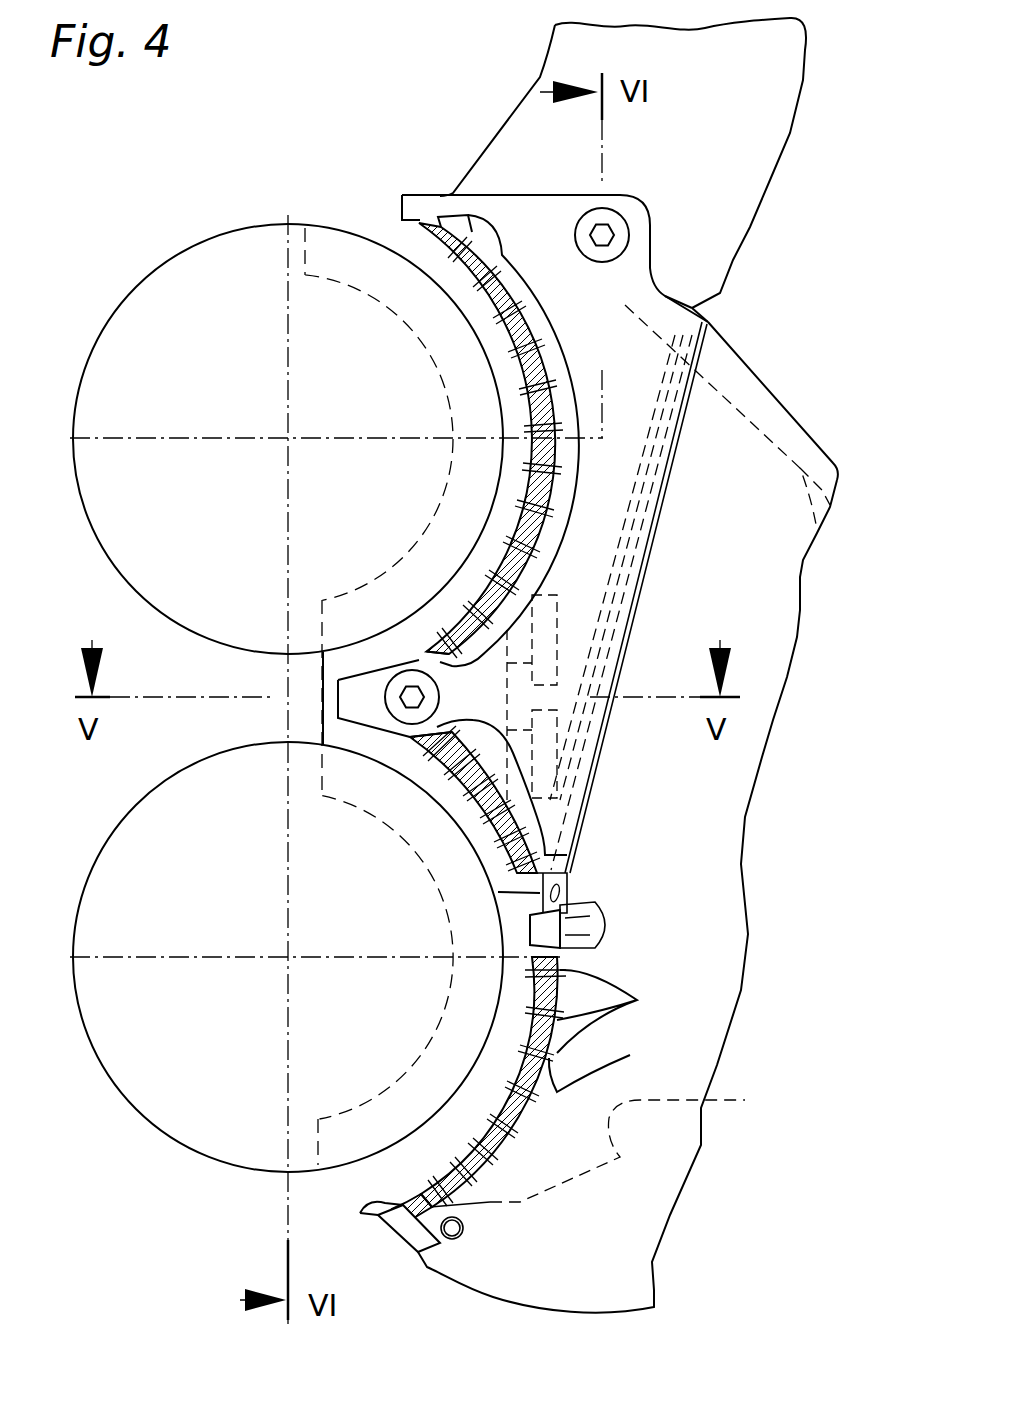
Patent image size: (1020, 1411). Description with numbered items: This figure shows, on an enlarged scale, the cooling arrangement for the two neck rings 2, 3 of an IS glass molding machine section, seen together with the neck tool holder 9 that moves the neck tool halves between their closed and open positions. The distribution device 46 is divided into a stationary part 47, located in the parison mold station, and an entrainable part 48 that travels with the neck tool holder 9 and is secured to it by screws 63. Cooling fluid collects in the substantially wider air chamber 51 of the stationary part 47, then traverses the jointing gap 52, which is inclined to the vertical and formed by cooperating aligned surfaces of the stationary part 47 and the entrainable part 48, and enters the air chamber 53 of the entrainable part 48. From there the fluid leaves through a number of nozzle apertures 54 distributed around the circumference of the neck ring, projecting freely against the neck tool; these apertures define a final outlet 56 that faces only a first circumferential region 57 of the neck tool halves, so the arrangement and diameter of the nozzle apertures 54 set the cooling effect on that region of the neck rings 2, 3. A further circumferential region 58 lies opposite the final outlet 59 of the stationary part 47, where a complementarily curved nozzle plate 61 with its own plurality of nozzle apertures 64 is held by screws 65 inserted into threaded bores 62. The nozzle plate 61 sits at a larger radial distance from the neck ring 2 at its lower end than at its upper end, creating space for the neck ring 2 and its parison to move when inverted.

The neck ring 2 is at (222, 1178).
The neck ring 3 is at (240, 200).
The neck tool holder 9 is at (400, 228).
The distribution device 46 is at (742, 345).
The stationary part 47 is at (785, 397).
The entrainable part 48 is at (668, 278).
The air chamber 51 is at (820, 538).
The jointing gap 52 is at (660, 532).
The air chamber 53 is at (505, 243).
The nozzle apertures 54 is at (525, 505).
The final outlet 56 is at (485, 333).
The first circumferential region 57 is at (540, 388).
The further circumferential region 58 is at (432, 1125).
The final outlet 59 is at (505, 1082).
The nozzle plate 61 is at (630, 1055).
The threaded bores 62 is at (440, 1270).
The screws 63 is at (605, 235).
The nozzle apertures 64 is at (565, 1030).
The screws 65 is at (598, 930).